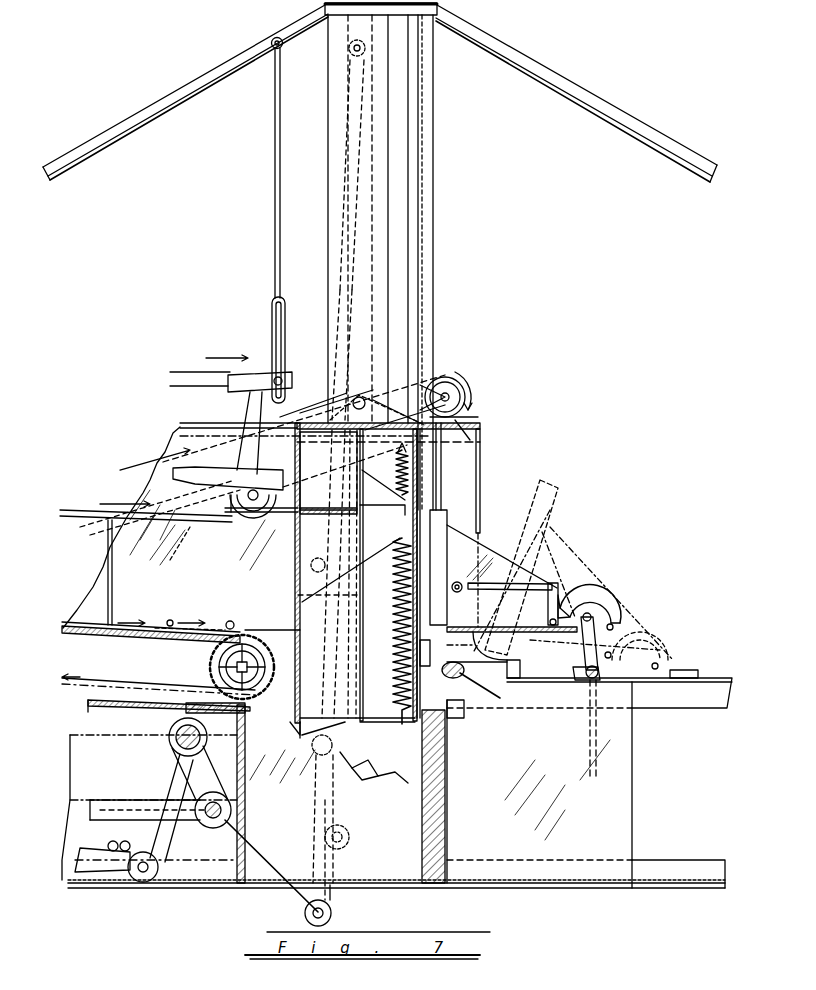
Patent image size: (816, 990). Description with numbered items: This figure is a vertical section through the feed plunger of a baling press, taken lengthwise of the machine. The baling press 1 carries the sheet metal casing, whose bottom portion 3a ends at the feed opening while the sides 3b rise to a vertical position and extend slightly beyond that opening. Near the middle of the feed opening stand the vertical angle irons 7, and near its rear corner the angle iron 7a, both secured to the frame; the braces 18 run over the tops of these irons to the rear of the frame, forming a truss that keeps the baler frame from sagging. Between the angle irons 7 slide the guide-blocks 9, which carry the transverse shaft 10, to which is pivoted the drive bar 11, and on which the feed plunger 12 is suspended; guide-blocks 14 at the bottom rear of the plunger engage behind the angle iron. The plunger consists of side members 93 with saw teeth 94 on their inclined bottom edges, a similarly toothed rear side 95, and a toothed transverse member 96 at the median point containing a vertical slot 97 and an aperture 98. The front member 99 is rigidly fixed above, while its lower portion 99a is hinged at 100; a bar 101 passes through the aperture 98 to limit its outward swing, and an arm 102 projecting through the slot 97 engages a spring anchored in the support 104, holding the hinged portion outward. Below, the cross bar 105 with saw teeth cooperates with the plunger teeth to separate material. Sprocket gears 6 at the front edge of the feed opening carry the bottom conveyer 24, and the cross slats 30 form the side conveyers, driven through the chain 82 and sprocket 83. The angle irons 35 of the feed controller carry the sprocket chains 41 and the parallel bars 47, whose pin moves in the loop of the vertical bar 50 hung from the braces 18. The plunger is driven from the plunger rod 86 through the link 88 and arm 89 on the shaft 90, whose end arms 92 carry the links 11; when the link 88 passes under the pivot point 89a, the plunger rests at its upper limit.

The baling press 1 is at (660, 690).
The bottom portion 3a is at (125, 640).
The sides 3b is at (165, 490).
The sprocket gears 6 is at (210, 665).
The vertical angle irons 7 is at (380, 84).
The angle iron 7a is at (424, 110).
The guide-blocks 9 is at (359, 396).
The transverse shaft 10 is at (352, 397).
The drive bar 11 is at (332, 898).
The feed plunger 12 is at (343, 143).
The guide-blocks 14 is at (446, 662).
The braces 18 is at (75, 160).
The conveyer 24 is at (90, 686).
The cross slats 30 is at (110, 560).
The angle irons 35 is at (215, 480).
The sprocket chains 41 is at (95, 510).
The parallel bars 47 is at (240, 380).
The vertical bar 50 is at (276, 262).
The chain 82 is at (195, 527).
The sprocket 83 is at (447, 380).
The plunger rod 86 is at (140, 805).
The link 88 is at (130, 862).
The arm 89 is at (170, 765).
The pivot point 89a is at (290, 752).
The shaft 90 is at (175, 735).
The arm 92 is at (305, 900).
The side members 93 is at (393, 791).
The saw teeth 94 is at (395, 752).
The rear side 95 is at (430, 720).
The transverse member 96 is at (318, 745).
The vertical slot 97 is at (392, 565).
The aperture 98 is at (330, 714).
The front member 99 is at (310, 446).
The lower portion 99a is at (296, 575).
The hinge 100 is at (295, 535).
The bar 101 is at (345, 720).
The arm 102 is at (390, 512).
The support 104 is at (447, 745).
The cross bar 105 is at (282, 630).